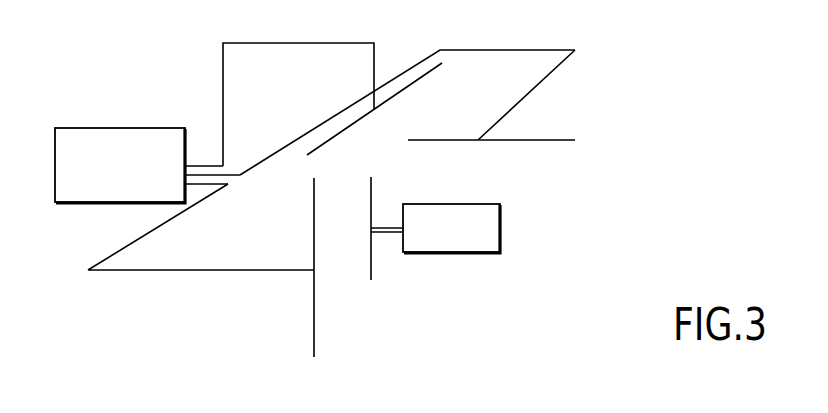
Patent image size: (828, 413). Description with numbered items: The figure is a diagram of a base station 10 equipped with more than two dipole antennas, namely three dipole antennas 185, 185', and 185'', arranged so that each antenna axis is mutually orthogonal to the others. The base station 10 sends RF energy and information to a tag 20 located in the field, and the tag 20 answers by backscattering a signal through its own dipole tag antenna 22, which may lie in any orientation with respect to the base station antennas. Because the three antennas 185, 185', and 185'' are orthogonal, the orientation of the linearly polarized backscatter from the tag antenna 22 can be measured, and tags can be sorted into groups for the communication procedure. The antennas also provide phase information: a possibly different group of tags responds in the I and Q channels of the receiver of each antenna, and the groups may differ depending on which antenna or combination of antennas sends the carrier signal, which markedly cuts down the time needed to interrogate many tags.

The base station 10 is at (100, 128).
The dipole antenna 185 is at (239, 267).
The dipole antenna 185' is at (407, 112).
The dipole antenna 185'' is at (527, 95).
The tag antenna 22 is at (371, 193).
The tag 20 is at (502, 227).